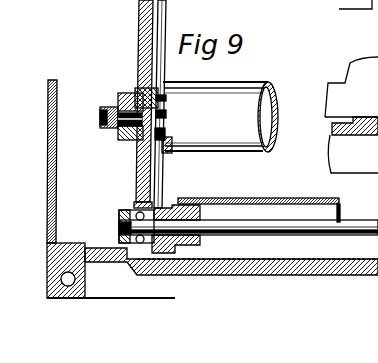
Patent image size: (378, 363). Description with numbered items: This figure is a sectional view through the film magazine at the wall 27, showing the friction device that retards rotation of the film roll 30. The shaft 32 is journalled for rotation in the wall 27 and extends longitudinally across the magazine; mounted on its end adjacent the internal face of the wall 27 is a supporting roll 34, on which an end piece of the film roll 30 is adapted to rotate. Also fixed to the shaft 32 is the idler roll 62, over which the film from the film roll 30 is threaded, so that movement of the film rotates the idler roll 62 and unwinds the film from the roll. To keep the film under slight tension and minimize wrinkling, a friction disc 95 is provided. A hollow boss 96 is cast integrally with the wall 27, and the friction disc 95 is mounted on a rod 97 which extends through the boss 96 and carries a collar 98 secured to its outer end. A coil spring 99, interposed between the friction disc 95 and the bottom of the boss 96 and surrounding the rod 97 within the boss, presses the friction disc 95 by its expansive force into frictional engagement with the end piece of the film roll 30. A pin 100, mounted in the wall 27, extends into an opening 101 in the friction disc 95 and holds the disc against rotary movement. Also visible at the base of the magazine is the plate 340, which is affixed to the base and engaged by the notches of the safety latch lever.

The wall 27 is at (139, 58).
The film roll 30 is at (231, 82).
The shaft 32 is at (244, 229).
The supporting roll 34 is at (181, 199).
The idler roll 62 is at (259, 198).
The friction disc 95 is at (160, 113).
The hollow boss 96 is at (135, 94).
The rod 97 is at (106, 110).
The collar 98 is at (108, 130).
The coil spring 99 is at (162, 126).
The pin 100 is at (129, 141).
The opening 101 is at (168, 143).
The plate 340 is at (377, 140).